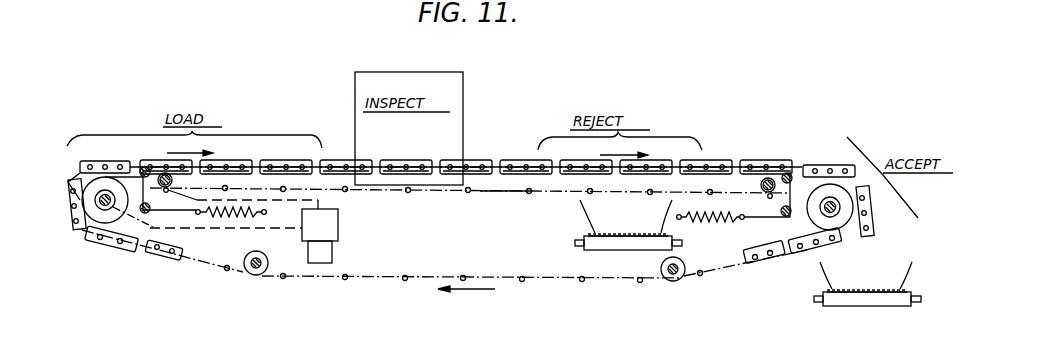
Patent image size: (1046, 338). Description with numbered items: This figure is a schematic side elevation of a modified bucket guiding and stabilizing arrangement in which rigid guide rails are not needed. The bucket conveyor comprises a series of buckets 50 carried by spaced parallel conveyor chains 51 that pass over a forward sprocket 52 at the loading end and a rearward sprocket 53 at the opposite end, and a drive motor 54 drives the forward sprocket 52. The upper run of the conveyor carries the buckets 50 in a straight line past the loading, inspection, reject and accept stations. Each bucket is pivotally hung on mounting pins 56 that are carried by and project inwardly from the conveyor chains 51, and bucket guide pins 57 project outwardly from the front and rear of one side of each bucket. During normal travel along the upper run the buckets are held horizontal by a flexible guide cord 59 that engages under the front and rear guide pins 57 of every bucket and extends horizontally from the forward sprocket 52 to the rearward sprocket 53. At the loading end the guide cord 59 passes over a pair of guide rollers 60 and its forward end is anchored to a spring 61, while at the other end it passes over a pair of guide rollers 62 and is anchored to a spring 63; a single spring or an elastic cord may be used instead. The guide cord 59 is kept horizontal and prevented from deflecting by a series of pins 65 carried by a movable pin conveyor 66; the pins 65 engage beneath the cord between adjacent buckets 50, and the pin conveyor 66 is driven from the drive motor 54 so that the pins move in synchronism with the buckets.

The buckets 50 is at (447, 210).
The conveyor chains 51 is at (540, 282).
The forward sprocket 52 is at (82, 232).
The rearward sprocket 53 is at (817, 233).
The drive motor 54 is at (332, 251).
The mounting pins 56 is at (244, 157).
The bucket guide pins 57 is at (122, 163).
The flexible guide cord 59 is at (170, 208).
The guide rollers 60 is at (168, 190).
The spring 61 is at (268, 212).
The guide rollers 62 is at (776, 198).
The spring 63 is at (724, 221).
The pins 65 is at (378, 191).
The pin conveyor 66 is at (505, 192).